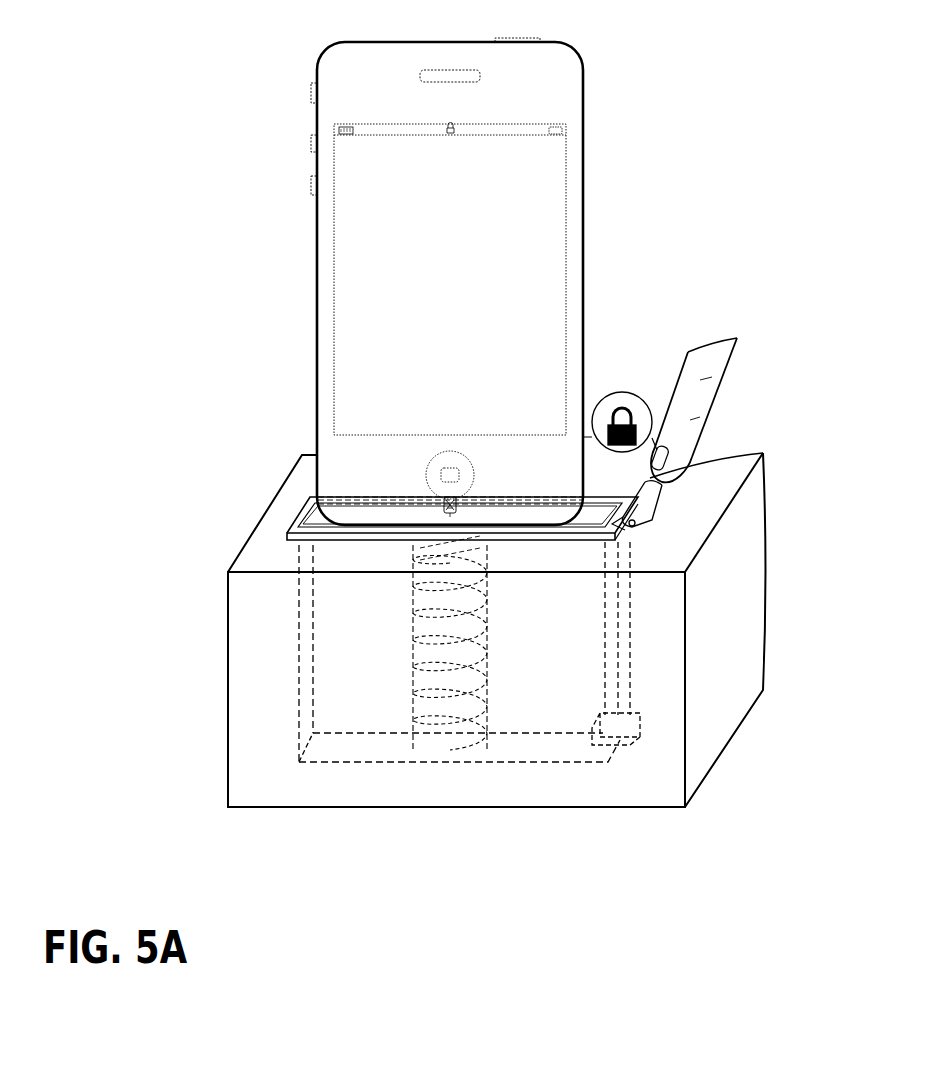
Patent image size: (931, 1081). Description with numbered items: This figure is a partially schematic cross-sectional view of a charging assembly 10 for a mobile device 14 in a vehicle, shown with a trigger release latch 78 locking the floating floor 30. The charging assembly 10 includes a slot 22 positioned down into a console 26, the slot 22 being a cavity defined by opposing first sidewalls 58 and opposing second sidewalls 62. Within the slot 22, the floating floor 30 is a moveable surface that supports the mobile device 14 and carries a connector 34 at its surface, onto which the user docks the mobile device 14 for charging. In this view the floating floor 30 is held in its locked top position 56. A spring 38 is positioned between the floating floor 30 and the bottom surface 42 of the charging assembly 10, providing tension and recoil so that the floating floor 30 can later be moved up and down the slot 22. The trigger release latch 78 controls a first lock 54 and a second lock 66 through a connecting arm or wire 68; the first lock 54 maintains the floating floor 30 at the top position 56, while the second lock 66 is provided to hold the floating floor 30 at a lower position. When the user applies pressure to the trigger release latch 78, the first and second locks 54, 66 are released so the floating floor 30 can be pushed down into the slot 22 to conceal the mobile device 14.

The charging assembly 10 is at (247, 433).
The mobile device 14 is at (547, 95).
The slot 22 is at (358, 672).
The console 26 is at (722, 483).
The floating floor 30 is at (312, 518).
The connector 34 is at (452, 500).
The spring 38 is at (448, 700).
The bottom surface 42 is at (530, 748).
The first lock 54 is at (624, 528).
The top position 56 is at (298, 522).
The opposing first sidewalls 58 is at (335, 592).
The opposing second sidewalls 62 is at (298, 647).
The second lock 66 is at (625, 730).
The connecting arm or wire 68 is at (630, 626).
The trigger release latch 78 is at (648, 500).